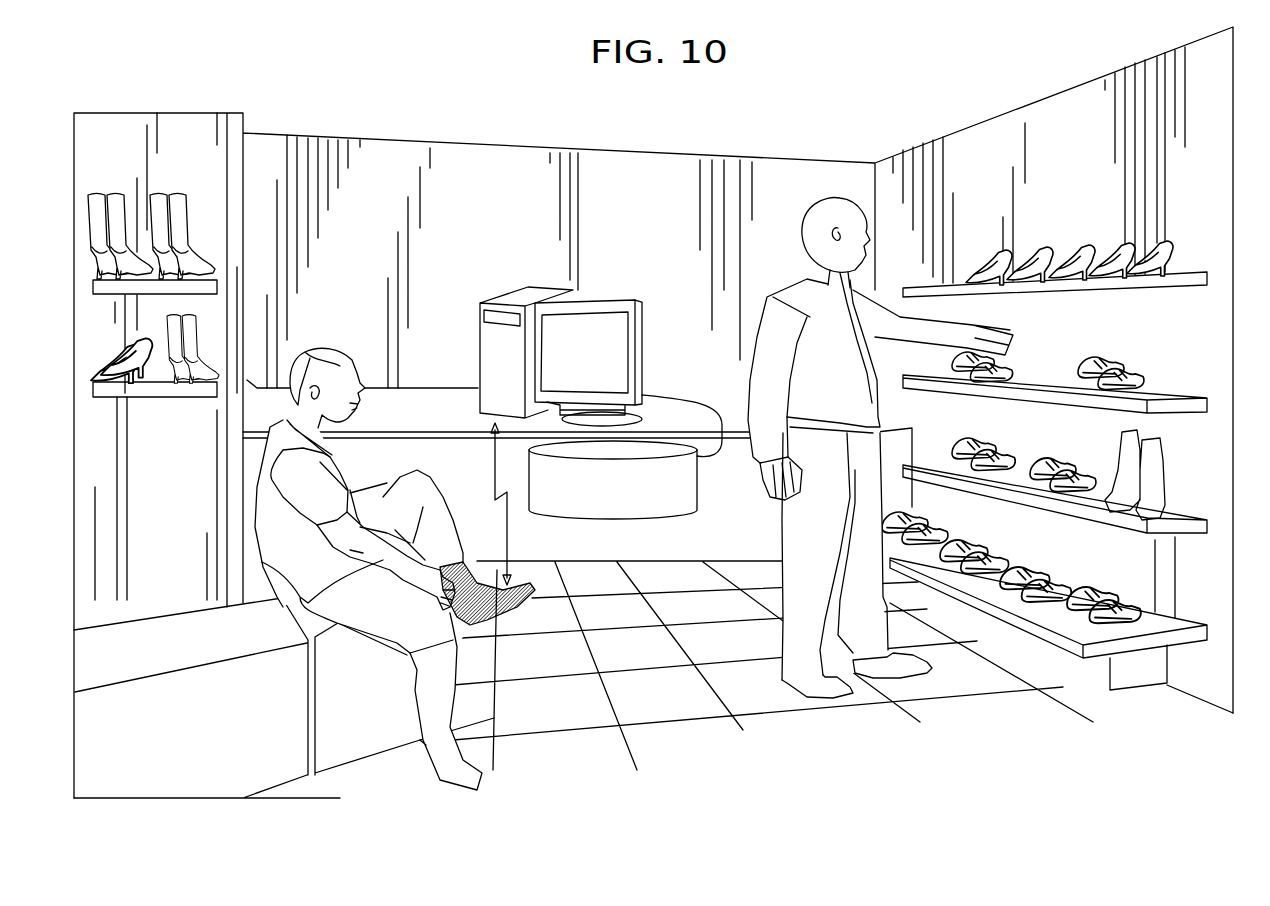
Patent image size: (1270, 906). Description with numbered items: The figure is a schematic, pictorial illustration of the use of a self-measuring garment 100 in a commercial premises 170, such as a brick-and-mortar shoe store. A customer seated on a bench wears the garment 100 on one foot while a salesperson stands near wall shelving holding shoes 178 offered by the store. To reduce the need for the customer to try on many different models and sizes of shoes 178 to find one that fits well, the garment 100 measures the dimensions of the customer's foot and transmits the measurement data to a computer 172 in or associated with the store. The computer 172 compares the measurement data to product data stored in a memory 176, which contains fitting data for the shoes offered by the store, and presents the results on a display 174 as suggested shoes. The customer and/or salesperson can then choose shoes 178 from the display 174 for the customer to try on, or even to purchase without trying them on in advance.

The commercial premises 170 is at (760, 179).
The computer 172 is at (515, 290).
The display 174 is at (645, 330).
The memory 176 is at (617, 517).
The shoes 178 is at (1036, 350).
The self-measuring garment 100 is at (500, 617).